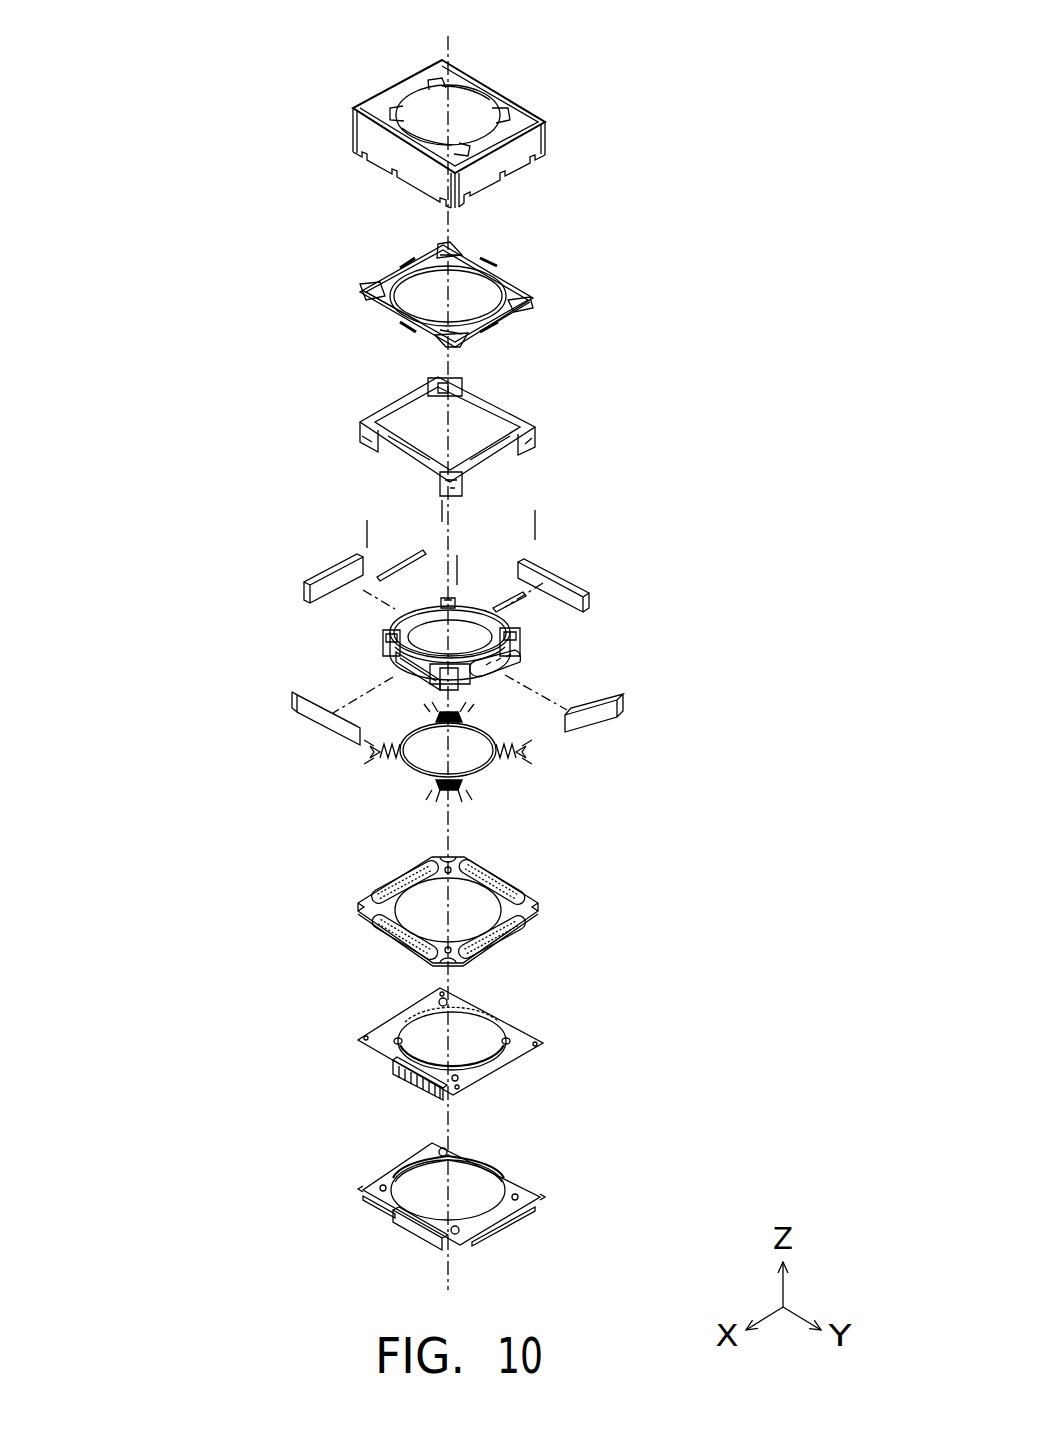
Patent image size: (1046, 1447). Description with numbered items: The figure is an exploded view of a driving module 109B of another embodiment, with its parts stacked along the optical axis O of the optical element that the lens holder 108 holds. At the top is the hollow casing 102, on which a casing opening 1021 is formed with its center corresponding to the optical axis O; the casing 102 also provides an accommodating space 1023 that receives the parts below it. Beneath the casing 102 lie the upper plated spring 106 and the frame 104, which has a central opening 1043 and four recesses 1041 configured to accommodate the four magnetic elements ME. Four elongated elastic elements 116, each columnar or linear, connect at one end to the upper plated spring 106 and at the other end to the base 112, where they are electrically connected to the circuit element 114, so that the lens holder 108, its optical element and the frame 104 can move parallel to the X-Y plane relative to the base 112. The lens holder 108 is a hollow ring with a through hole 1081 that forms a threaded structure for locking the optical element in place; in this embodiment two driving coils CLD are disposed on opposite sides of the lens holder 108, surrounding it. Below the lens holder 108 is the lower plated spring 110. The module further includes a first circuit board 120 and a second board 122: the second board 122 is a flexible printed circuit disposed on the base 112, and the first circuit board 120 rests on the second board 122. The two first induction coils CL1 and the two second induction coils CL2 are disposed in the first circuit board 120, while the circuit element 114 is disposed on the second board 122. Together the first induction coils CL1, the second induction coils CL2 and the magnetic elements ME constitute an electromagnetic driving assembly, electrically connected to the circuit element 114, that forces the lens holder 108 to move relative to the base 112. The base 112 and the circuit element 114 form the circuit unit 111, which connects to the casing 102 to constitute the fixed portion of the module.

The driving module 109B is at (168, 82).
The optical axis O is at (448, 645).
The casing 102 is at (372, 100).
The casing opening 1021 is at (480, 120).
The accommodating space 1023 is at (577, 120).
The upper plated spring 106 is at (505, 298).
The frame 104 is at (458, 379).
The recesses 1041 is at (418, 430).
The central opening 1043 is at (390, 405).
The elastic elements 116 is at (442, 508).
The magnetic elements ME is at (343, 583).
The driving coil CLD is at (405, 628).
The lens holder 108 is at (462, 604).
The through hole 1081 is at (474, 620).
The lower plated spring 110 is at (530, 758).
The first circuit board 120 is at (541, 900).
The first induction coils CL1 is at (388, 873).
The second induction coils CL2 is at (498, 872).
The second board 122 is at (520, 1053).
The circuit unit 111 is at (292, 1083).
The circuit element 114 is at (392, 1073).
The base 112 is at (396, 1172).